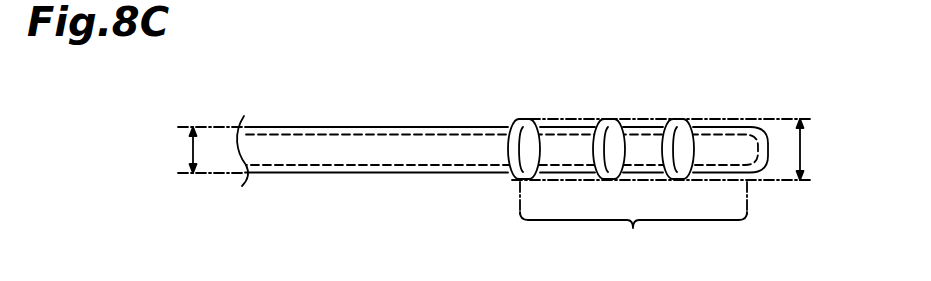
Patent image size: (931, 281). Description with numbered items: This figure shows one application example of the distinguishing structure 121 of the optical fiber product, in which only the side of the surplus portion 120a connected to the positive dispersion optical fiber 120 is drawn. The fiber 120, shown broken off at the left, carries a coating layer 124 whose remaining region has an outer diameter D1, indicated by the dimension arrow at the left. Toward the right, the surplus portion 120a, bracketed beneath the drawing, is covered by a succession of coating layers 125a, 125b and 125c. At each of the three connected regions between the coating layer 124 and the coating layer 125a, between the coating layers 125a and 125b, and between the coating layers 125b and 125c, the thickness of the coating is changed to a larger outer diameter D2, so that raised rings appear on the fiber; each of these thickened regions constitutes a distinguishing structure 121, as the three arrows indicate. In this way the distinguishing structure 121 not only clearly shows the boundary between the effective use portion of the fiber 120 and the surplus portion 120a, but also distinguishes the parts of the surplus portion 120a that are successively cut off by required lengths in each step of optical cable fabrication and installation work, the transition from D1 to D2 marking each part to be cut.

The second optical fiber 120 is at (502, 122).
The coating layer 124 is at (435, 126).
The distinguishing structure 121 is at (518, 117).
The coating layer 125a is at (577, 126).
The coating layer 125b is at (643, 126).
The coating layer 125c is at (725, 126).
The working surplus portion 120a is at (633, 220).
The outer diameter D1 is at (195, 150).
The outer diameter D2 is at (678, 149).